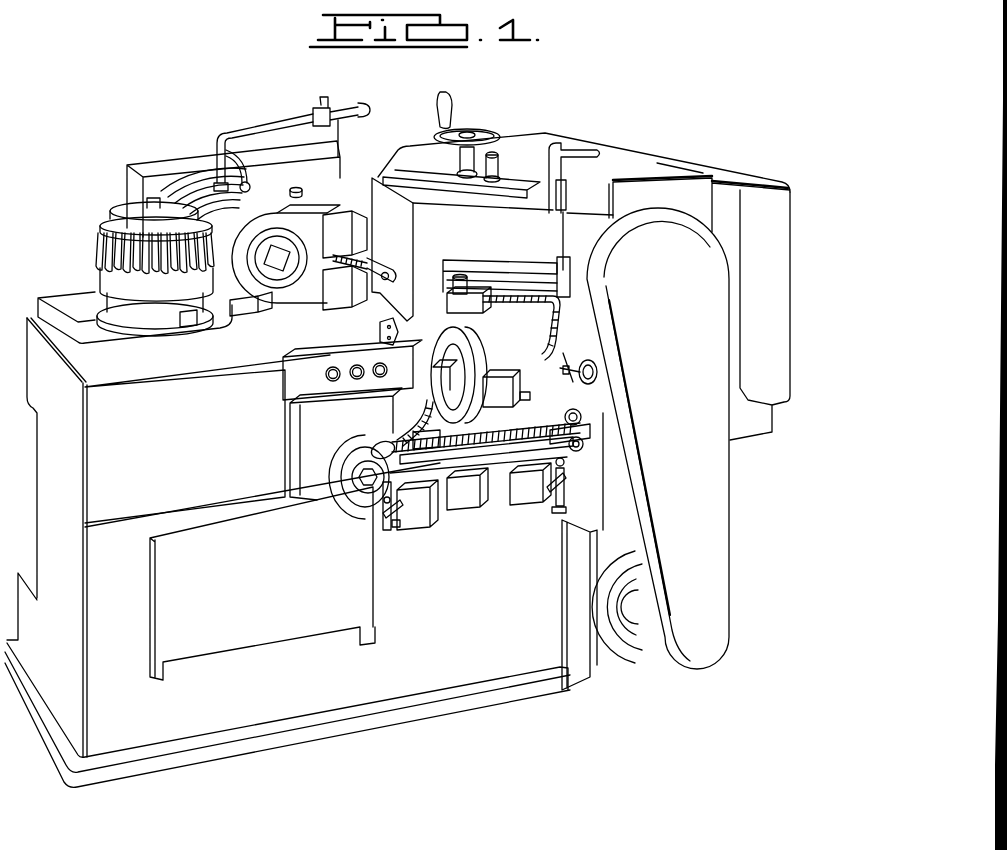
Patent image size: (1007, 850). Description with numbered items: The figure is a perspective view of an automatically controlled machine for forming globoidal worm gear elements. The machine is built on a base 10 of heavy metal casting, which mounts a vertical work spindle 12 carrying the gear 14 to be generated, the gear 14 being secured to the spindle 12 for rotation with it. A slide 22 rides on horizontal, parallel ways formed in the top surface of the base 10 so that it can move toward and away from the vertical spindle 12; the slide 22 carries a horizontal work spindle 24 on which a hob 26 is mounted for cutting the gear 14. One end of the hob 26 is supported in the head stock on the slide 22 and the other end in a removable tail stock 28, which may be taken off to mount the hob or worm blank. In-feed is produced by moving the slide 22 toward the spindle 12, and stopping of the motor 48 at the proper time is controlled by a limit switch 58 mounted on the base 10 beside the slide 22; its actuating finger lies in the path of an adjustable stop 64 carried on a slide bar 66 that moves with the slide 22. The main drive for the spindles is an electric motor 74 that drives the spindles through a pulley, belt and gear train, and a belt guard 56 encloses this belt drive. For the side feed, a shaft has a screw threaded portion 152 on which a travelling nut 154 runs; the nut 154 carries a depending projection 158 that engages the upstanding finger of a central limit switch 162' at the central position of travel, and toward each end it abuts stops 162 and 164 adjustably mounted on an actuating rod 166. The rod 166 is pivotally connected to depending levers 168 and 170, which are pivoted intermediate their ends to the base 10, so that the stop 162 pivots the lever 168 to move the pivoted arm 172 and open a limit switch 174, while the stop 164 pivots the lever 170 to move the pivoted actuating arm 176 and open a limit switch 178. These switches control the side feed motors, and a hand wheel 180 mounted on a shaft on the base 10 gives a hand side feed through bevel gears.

The base 10 is at (198, 722).
The vertical work spindle 12 is at (140, 210).
The gear 14 is at (97, 258).
The slide 22 is at (372, 178).
The horizontal work spindle 24 is at (233, 217).
The hob 26 is at (297, 194).
The removable tail stock 28 is at (274, 290).
The motor 48 is at (583, 385).
The belt guard 56 is at (610, 346).
The limit switch 58 is at (470, 307).
The adjustable stop 64 is at (462, 280).
The slide bar 66 is at (521, 278).
The electric motor 74 is at (633, 648).
The screw threaded portion 152 is at (573, 418).
The travelling nut 154 is at (428, 403).
The depending projection 158 is at (485, 448).
The stop 162 is at (352, 521).
The central limit switch 162' is at (472, 512).
The stop 164 is at (525, 400).
The actuating rod 166 is at (527, 508).
The depending lever 168 is at (380, 540).
The depending lever 170 is at (560, 480).
The pivoted arm 172 is at (406, 530).
The limit switch 174 is at (418, 512).
The pivoted actuating arm 176 is at (553, 527).
The limit switch 178 is at (545, 505).
The hand wheel 180 is at (340, 510).